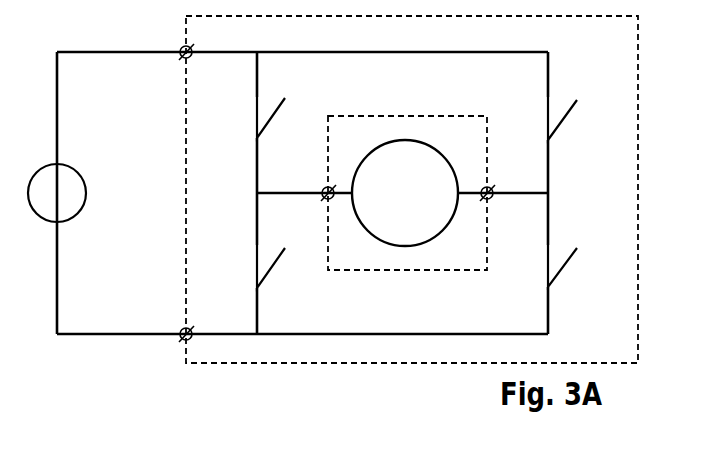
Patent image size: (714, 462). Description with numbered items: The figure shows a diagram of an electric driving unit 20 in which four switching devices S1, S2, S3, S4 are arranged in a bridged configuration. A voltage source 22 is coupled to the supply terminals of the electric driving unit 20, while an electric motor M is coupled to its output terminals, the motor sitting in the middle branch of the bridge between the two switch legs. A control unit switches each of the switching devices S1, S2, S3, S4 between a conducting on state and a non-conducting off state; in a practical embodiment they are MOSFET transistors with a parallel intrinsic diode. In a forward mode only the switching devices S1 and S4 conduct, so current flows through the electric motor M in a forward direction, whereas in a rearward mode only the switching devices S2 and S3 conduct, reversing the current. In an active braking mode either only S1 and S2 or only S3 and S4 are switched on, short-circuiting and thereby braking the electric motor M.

The electric driving unit 20 is at (268, 363).
The voltage source 22 is at (86, 206).
The switching device S1 is at (251, 117).
The switching device S2 is at (578, 118).
The switching device S3 is at (251, 266).
The switching device S4 is at (578, 266).
The electric motor M is at (407, 193).